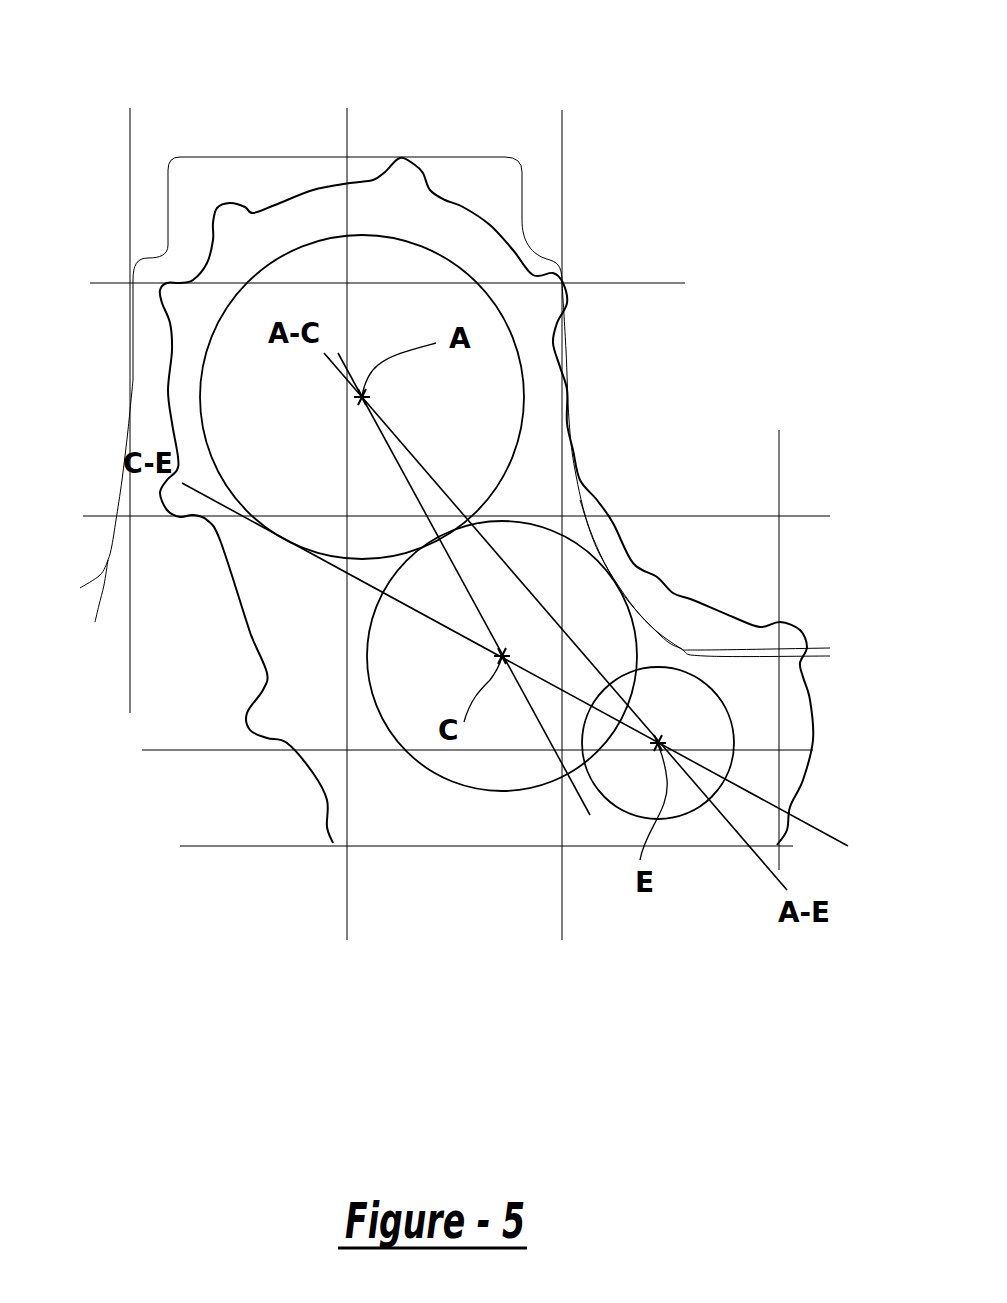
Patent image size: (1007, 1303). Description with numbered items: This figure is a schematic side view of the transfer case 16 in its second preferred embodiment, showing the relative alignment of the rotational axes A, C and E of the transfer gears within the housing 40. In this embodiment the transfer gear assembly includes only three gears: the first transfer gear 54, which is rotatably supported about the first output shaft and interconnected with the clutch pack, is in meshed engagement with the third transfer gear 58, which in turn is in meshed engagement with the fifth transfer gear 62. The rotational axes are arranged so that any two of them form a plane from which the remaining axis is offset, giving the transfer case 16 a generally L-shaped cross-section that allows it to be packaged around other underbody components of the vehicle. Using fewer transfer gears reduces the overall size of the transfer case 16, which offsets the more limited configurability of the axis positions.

The transfer case 16 is at (690, 441).
The housing 40 is at (556, 355).
The first transfer gear 54 is at (460, 267).
The third transfer gear 58 is at (582, 587).
The fifth transfer gear 62 is at (692, 700).